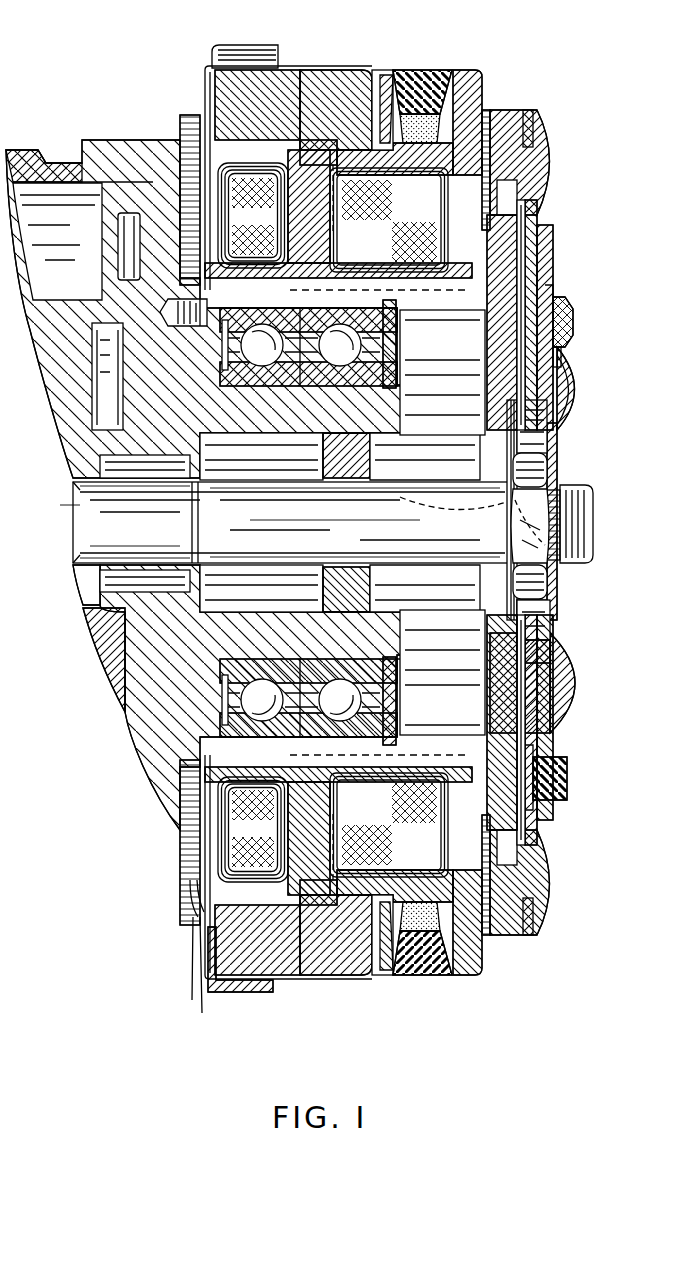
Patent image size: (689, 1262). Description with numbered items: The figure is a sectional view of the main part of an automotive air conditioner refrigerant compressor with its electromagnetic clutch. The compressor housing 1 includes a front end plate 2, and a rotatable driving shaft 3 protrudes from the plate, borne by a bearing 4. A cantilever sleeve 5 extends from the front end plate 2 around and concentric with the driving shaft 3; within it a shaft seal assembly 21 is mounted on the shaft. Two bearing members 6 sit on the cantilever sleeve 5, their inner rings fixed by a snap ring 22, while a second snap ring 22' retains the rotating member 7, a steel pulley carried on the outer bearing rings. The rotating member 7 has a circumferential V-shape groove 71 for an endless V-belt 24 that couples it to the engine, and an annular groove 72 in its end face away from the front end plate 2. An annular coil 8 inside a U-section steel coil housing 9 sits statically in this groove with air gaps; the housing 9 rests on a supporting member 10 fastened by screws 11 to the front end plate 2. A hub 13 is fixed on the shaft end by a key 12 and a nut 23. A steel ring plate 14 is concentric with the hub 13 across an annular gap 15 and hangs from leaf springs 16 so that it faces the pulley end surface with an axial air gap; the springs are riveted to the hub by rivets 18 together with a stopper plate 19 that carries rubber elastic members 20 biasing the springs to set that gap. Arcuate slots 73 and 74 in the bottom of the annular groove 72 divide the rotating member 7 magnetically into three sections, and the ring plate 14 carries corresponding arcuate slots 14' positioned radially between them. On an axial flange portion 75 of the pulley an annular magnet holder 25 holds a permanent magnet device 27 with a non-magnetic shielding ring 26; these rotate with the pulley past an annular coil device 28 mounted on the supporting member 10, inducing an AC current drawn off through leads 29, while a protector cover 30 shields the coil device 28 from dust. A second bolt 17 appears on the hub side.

The compressor housing 1 is at (22, 156).
The front end plate 2 is at (143, 152).
The driving shaft 3 is at (540, 506).
The bearing 4 is at (105, 485).
The cantilever sleeve 5 is at (400, 642).
The bearing members 6 is at (225, 703).
The rotating member 7 is at (468, 92).
The annular coil 8 is at (383, 180).
The annular coil housing 9 is at (337, 165).
The supporting member 10 is at (190, 760).
The screws 11 is at (162, 312).
The key 12 is at (550, 482).
The hub 13 is at (500, 456).
The ring plate 14 is at (534, 318).
The annular gap 15 is at (553, 320).
The leaf springs 16 is at (530, 248).
The bolt 17 is at (545, 645).
The rivets 18 is at (565, 396).
The stopper plate 19 is at (550, 292).
The elastic members 20 is at (565, 342).
The shaft seal assembly 21 is at (400, 604).
The snap ring 22 is at (331, 701).
The upper bearing 22' is at (337, 344).
The nut 23 is at (540, 528).
The endless V-belt 24 is at (428, 70).
The annular magnet holder 25 is at (284, 70).
The magnetic shielding ring 26 is at (348, 80).
The annular permanent magnet device 27 is at (218, 86).
The annular coil device 28 is at (200, 125).
The leads 29 is at (182, 922).
The protector cover 30 is at (250, 992).
The circumferential V-shape groove 71 is at (440, 126).
The annular groove 72 is at (450, 212).
The arcuate slots 73 is at (470, 268).
The arcuate slots 74 is at (480, 170).
The axial flange portion 75 is at (318, 150).
The lower disc 14' is at (532, 736).